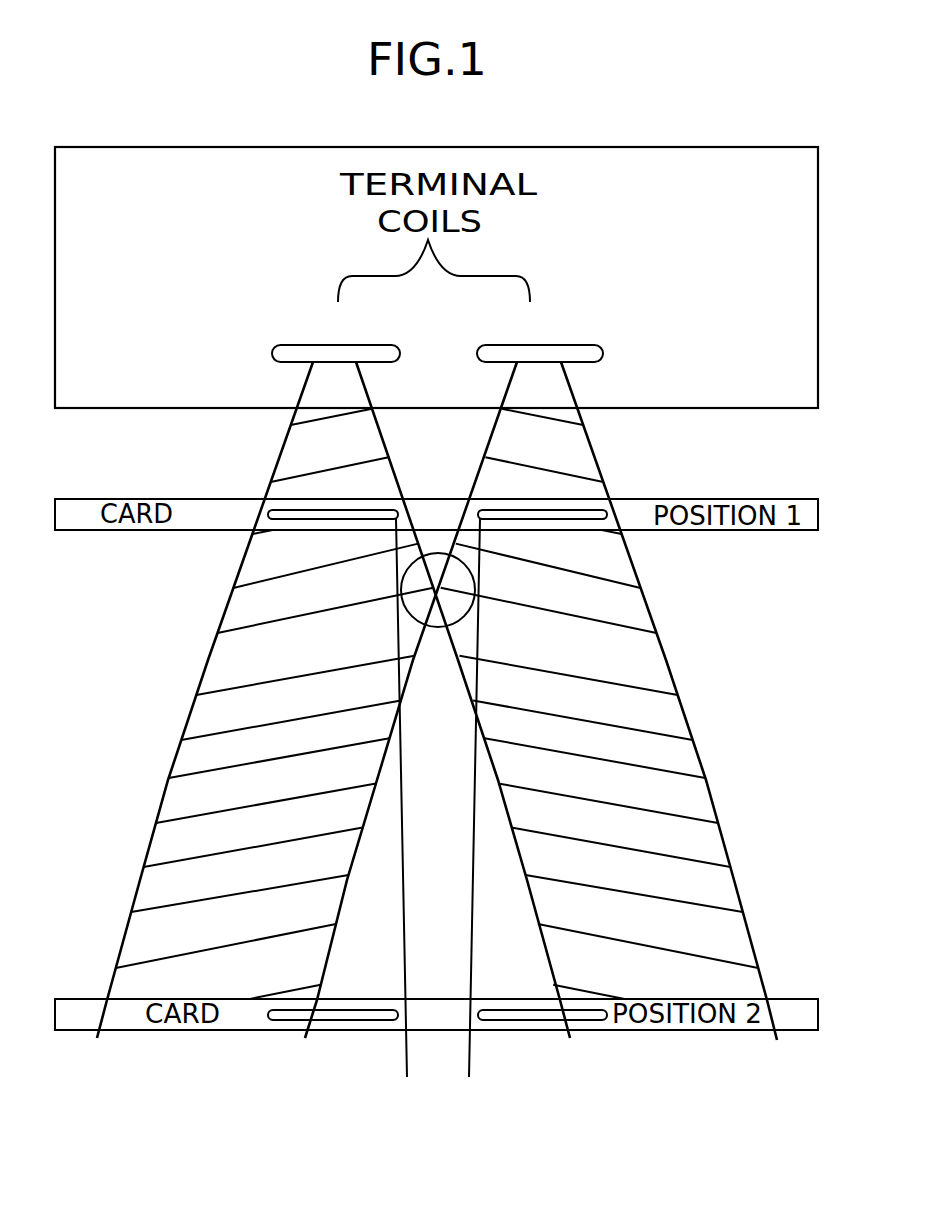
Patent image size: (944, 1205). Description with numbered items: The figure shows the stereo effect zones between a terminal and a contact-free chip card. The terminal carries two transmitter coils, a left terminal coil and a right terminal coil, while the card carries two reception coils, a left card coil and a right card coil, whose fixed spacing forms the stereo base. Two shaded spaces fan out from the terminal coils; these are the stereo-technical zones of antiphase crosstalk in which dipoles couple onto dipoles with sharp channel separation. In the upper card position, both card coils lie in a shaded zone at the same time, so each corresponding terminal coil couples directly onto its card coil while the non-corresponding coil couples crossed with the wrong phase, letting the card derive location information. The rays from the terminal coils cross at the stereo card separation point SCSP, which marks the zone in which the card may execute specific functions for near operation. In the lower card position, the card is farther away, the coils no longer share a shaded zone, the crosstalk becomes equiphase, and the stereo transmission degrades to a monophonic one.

The stereo card separation point SCSP is at (475, 590).